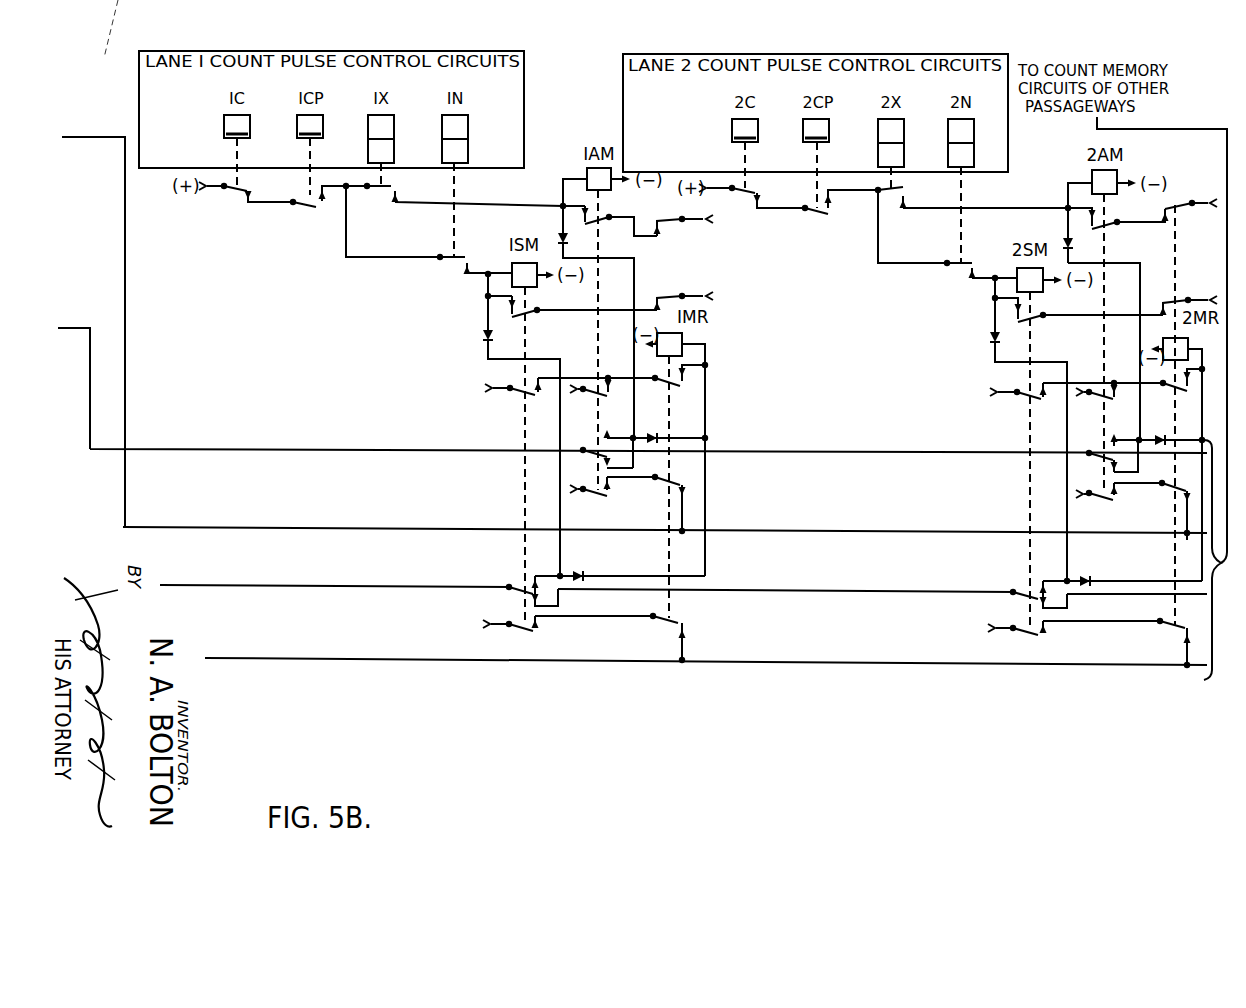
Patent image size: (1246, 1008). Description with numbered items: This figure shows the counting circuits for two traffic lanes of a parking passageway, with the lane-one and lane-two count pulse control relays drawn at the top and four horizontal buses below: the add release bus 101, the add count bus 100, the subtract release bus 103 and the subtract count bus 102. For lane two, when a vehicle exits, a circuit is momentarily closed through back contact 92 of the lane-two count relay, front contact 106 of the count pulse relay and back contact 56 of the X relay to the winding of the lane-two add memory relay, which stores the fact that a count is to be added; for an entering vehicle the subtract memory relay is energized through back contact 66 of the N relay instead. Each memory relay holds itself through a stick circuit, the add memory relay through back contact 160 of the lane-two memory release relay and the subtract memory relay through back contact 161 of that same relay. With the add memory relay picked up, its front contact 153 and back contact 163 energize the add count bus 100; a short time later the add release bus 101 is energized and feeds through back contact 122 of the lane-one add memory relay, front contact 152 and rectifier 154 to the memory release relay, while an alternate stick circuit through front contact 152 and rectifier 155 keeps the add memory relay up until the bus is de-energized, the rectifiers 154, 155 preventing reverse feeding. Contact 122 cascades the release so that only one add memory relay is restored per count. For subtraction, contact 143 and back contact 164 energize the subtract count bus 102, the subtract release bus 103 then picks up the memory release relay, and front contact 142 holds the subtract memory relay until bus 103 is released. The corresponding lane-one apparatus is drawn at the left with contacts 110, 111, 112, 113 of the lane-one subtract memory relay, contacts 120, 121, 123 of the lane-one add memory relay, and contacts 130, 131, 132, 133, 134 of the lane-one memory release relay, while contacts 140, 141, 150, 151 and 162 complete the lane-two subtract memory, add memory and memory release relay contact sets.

The add count bus 100 is at (85, 137).
The add release bus 101 is at (72, 328).
The subtract count bus 102 is at (478, 660).
The subtract release bus 103 is at (466, 587).
The back contact of relay 2C 92 is at (758, 192).
The front contact of relay 2CP 106 is at (826, 216).
The back contact of relay 2X 56 is at (904, 189).
The back contact of relay 2N 66 is at (968, 262).
The contact of subtract memory relay 1SM 110 is at (538, 309).
The contact of relay 1SM 111 is at (519, 392).
The contact of relay 1SM in subtract release bus 112 is at (516, 592).
The contact of relay 1SM to subtract count bus 113 is at (532, 631).
The contact of add memory relay 1AM 120 is at (612, 222).
The contact of relay 1AM 121 is at (603, 397).
The back contact of relay 1AM 122 is at (634, 454).
The contact of relay 1AM to add count bus 123 is at (603, 494).
The contact of memory release relay 1MR 130 is at (663, 220).
The contact of relay 1MR 131 is at (665, 297).
The contact of relay 1MR 132 is at (665, 384).
The contact of relay 1MR to add count bus 133 is at (660, 504).
The contact of relay 1MR to subtract count bus 134 is at (654, 620).
The contact of subtract memory relay 2SM 140 is at (1043, 320).
The contact of relay 2SM 141 is at (1026, 397).
The front contact of relay 2SM 142 is at (1021, 597).
The contact of relay 2SM 143 is at (1022, 636).
The contact of add memory relay 2AM 150 is at (1112, 230).
The contact of relay 2AM 151 is at (1109, 402).
The front contact of relay 2AM 152 is at (1103, 458).
The front contact of relay 2AM 153 is at (1107, 502).
The rectifier 154 is at (1165, 433).
The rectifier 155 is at (1063, 247).
The back contact of memory release relay 2MR 160 is at (1176, 205).
The back contact of relay 2MR 161 is at (1173, 297).
The contact of relay 2MR 162 is at (1170, 389).
The back contact of relay 2MR 163 is at (1164, 510).
The back contact of relay 2MR 164 is at (1164, 625).